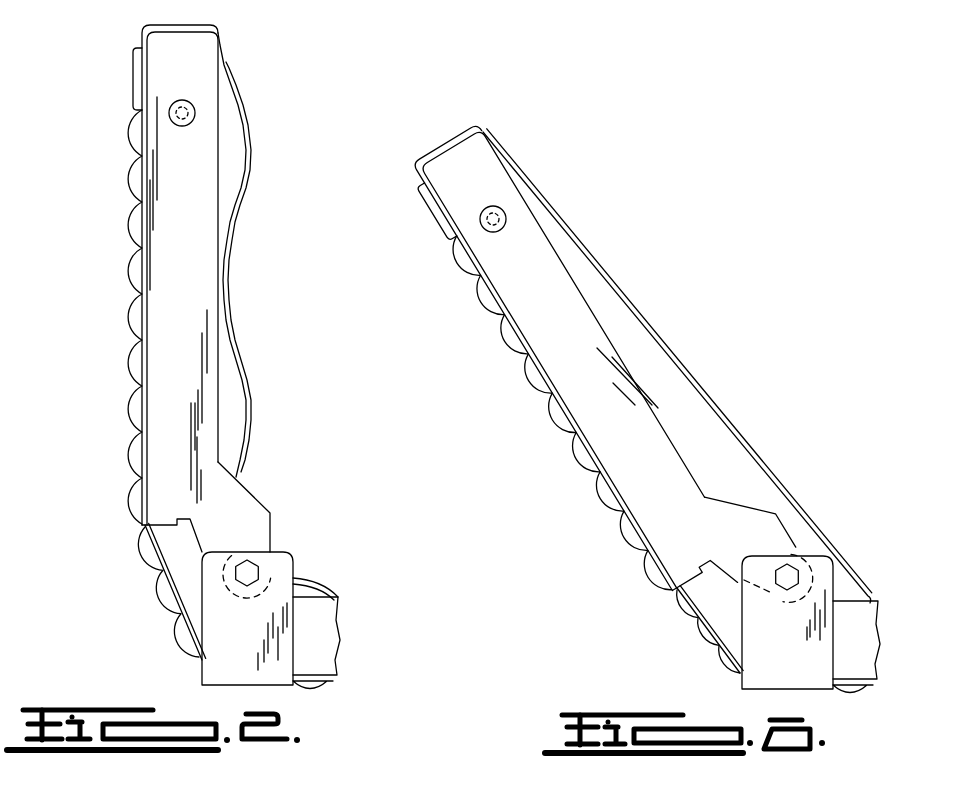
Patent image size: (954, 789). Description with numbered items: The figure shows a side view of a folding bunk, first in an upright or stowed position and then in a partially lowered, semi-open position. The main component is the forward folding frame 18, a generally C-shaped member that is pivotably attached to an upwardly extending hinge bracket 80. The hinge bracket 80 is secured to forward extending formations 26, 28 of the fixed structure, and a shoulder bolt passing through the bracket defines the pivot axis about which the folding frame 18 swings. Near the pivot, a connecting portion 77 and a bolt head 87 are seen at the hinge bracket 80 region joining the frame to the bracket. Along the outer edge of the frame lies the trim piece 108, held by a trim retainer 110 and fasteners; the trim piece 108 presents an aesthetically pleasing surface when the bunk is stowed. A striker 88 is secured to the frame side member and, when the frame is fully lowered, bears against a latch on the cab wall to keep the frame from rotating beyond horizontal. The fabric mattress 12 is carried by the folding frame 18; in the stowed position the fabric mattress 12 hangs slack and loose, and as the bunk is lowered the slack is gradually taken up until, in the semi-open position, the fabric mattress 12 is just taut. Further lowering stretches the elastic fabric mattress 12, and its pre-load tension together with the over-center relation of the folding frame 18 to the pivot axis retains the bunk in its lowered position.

In FIG. 3, the fabric mattress 12 is at (668, 352).
In FIG. 2, the forward folding frame 18 is at (200, 254).
In FIG. 3, the forward folding frame 18 is at (560, 315).
In FIG. 2, the forward extending formation 26 is at (375, 643).
In FIG. 3, the forward extending formation 26 is at (814, 647).
In FIG. 2, the forward extending formation 28 is at (325, 630).
In FIG. 3, the forward extending formation 28 is at (853, 647).
In FIG. 2, the connecting link 77 is at (256, 539).
In FIG. 3, the connecting link 77 is at (776, 554).
In FIG. 2, the hinge bracket 80 is at (290, 558).
In FIG. 3, the hinge bracket 80 is at (823, 570).
In FIG. 2, the pivot bolt 87 is at (255, 575).
In FIG. 3, the pivot bolt 87 is at (787, 586).
In FIG. 2, the striker 88 is at (170, 117).
In FIG. 3, the striker 88 is at (508, 211).
In FIG. 2, the trim piece 108 is at (130, 268).
In FIG. 3, the trim piece 108 is at (512, 337).
In FIG. 2, the trim retainer 110 is at (134, 72).
In FIG. 3, the trim retainer 110 is at (441, 224).